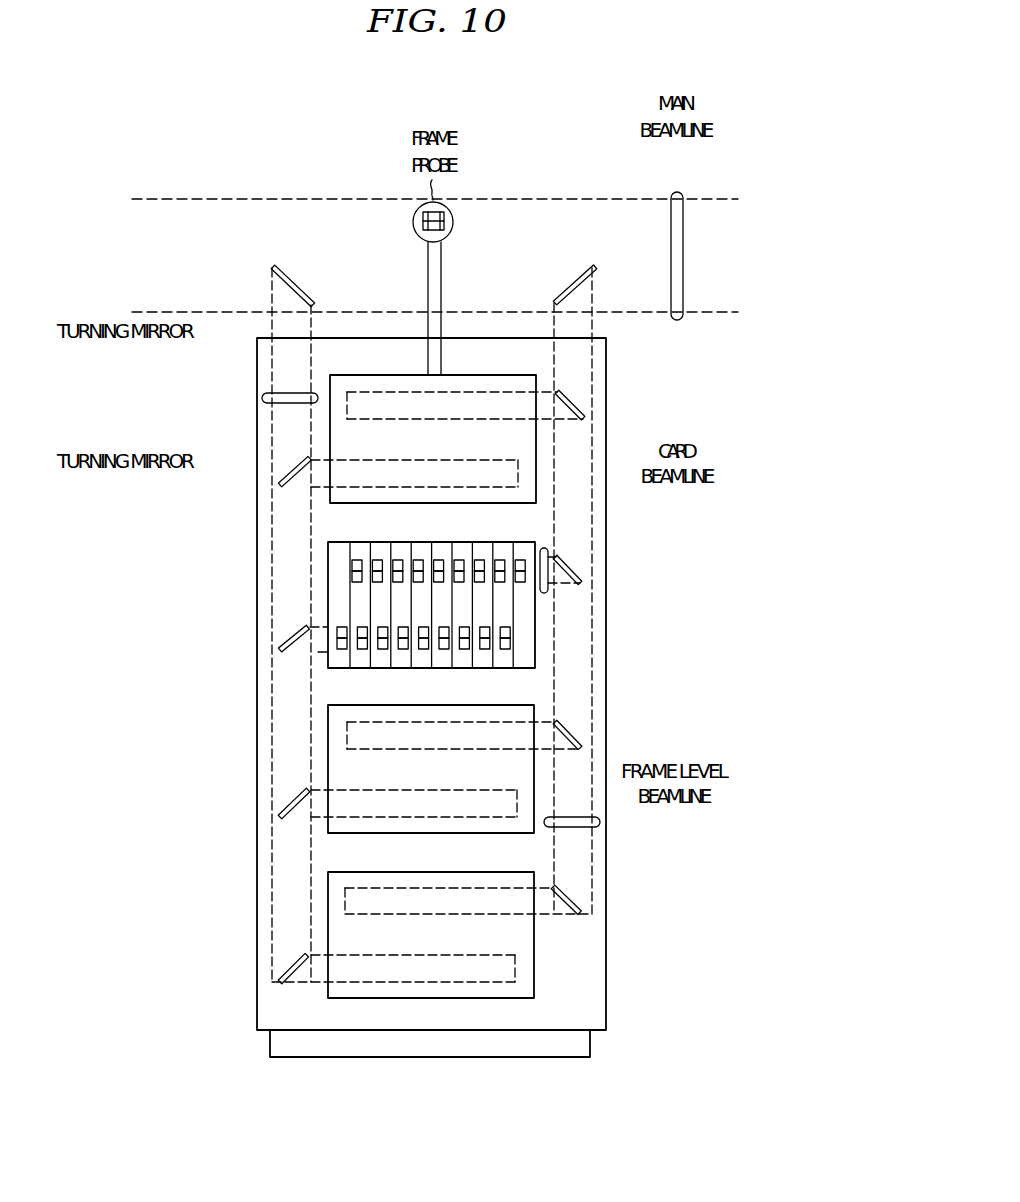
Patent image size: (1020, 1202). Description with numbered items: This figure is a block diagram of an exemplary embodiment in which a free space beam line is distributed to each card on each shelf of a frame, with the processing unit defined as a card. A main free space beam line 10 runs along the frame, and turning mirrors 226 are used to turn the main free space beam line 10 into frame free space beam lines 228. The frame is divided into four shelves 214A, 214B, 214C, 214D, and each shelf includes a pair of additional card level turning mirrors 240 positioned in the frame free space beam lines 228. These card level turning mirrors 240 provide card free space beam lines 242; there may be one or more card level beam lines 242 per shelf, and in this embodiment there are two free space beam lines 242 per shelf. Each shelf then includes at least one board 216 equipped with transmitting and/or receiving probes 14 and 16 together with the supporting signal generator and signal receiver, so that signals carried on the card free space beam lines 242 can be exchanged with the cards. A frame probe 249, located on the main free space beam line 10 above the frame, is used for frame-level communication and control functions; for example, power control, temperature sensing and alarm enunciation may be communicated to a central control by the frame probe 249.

The main free space beam line 10 is at (678, 192).
The transmitting and/or receiving probe 14 is at (348, 578).
The optical connector 16 is at (352, 562).
The shelf 214A is at (412, 450).
The shelf 214B is at (405, 542).
The shelf 214C is at (412, 780).
The shelf 214D is at (410, 945).
The board 216 is at (383, 669).
The turning mirror 226 is at (283, 293).
The frame free space beam line 228 is at (262, 398).
The card level turning mirror 240 is at (295, 468).
The card free space beam line 242 is at (548, 548).
The frame probe 249 is at (454, 220).